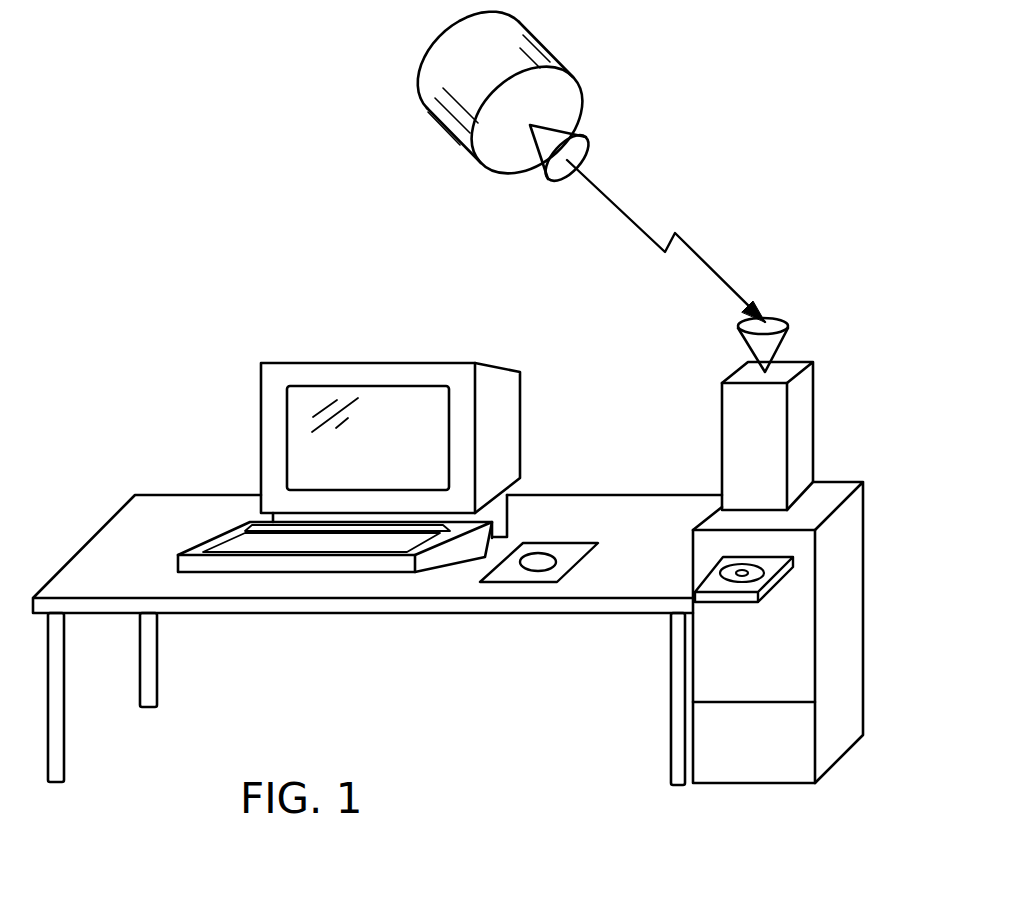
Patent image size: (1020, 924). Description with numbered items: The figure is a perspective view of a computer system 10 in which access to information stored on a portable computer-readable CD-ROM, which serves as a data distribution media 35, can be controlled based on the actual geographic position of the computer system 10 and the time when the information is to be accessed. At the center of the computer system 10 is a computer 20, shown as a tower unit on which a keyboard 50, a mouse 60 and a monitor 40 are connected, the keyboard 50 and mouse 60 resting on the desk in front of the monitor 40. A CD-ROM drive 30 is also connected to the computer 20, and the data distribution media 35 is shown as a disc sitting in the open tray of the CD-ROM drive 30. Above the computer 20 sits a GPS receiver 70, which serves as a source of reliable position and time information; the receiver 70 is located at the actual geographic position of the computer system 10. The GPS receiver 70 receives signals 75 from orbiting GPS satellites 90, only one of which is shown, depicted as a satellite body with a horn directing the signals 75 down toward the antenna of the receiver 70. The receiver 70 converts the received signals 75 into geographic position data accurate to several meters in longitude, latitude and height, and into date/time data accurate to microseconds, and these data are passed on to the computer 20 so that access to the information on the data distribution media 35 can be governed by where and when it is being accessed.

The computer system 10 is at (510, 645).
The computer 20 is at (842, 713).
The CD-ROM drive 30 is at (773, 585).
The data distribution media 35 is at (723, 570).
The monitor 40 is at (272, 425).
The keyboard 50 is at (193, 548).
The mouse 60 is at (570, 562).
The GPS receiver 70 is at (798, 395).
The signals 75 is at (688, 242).
The GPS satellites 90 is at (547, 52).